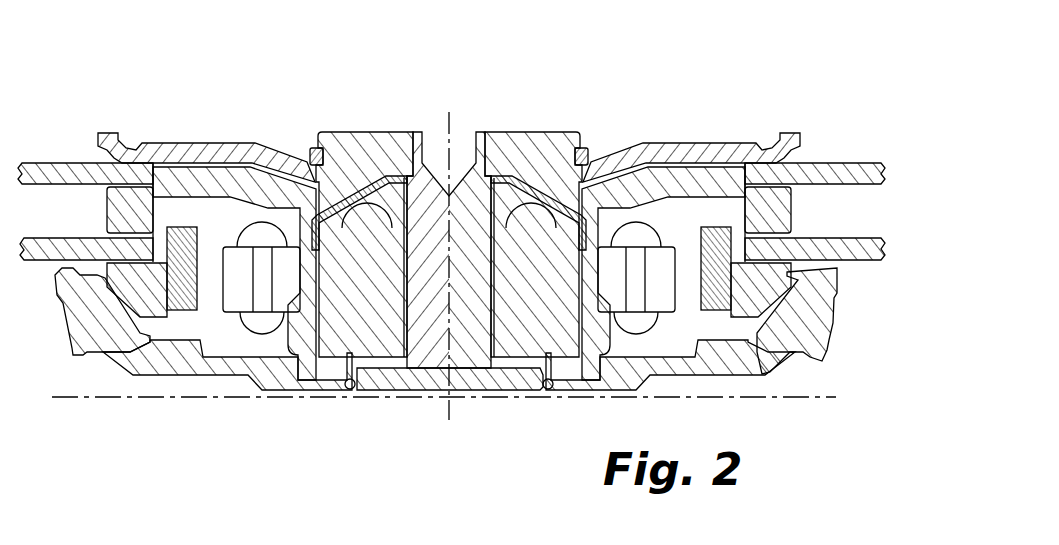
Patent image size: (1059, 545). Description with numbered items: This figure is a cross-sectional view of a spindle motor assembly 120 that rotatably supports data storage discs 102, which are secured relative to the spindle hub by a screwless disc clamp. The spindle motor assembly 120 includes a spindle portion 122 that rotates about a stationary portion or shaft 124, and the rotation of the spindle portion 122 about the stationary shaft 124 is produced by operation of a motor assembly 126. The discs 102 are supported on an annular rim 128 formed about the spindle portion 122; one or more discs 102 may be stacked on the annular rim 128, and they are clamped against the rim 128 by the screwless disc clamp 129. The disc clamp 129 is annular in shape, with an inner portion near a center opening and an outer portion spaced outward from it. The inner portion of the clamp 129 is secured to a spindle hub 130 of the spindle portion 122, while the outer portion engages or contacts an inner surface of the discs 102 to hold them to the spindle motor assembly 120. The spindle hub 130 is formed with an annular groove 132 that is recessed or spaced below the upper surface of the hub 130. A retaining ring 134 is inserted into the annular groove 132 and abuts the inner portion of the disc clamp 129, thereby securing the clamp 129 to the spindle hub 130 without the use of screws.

The discs 102 is at (831, 163).
The spindle motor assembly 120 is at (719, 120).
The spindle portion 122 is at (578, 132).
The shaft 124 is at (481, 129).
The motor assembly 126 is at (208, 276).
The annular rim 128 is at (792, 266).
The screwless disc clamp 129 is at (757, 140).
The spindle hub 130 is at (392, 131).
The annular groove 132 is at (323, 156).
The retaining ring 134 is at (593, 160).